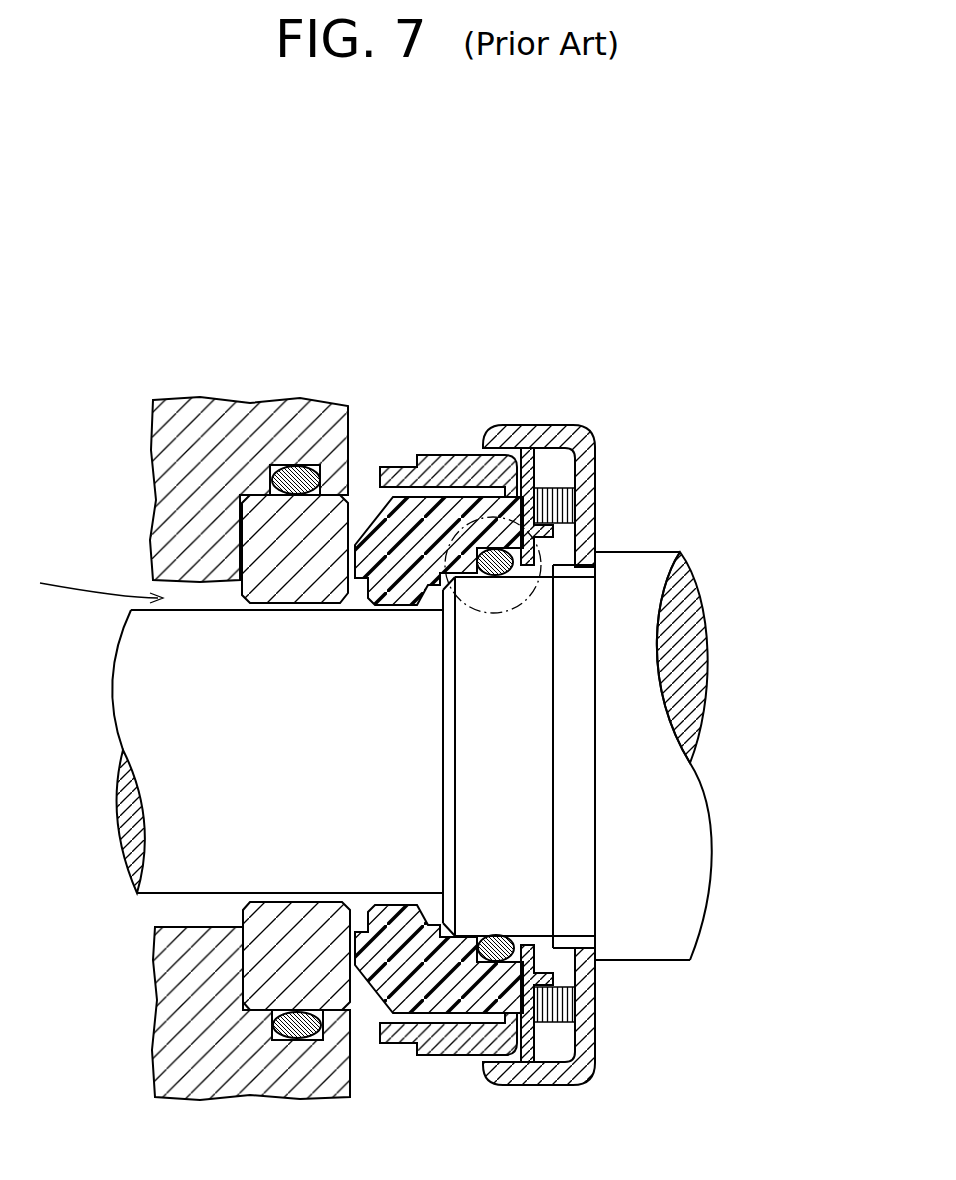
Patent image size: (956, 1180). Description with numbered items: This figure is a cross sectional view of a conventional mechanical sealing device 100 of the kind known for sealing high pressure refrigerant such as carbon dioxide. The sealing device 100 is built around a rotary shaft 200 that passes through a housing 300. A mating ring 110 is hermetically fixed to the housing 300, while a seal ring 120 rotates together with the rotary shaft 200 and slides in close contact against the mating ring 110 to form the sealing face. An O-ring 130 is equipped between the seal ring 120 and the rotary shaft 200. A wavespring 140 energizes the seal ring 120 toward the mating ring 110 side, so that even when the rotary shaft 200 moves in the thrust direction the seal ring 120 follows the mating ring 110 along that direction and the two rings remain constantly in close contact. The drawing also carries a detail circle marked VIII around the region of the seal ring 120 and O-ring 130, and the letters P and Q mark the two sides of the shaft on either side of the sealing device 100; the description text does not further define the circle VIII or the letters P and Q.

The mechanical sealing device 100 is at (564, 686).
The mating ring 110 is at (258, 529).
The seal ring 120 is at (418, 533).
The O-ring 130 is at (488, 548).
The wavespring 140 is at (557, 483).
The rotary shaft 200 is at (182, 808).
The housing 300 is at (233, 425).
The detail region VIII is at (532, 533).
The pressure side P is at (822, 456).
The atmosphere side Q is at (36, 603).